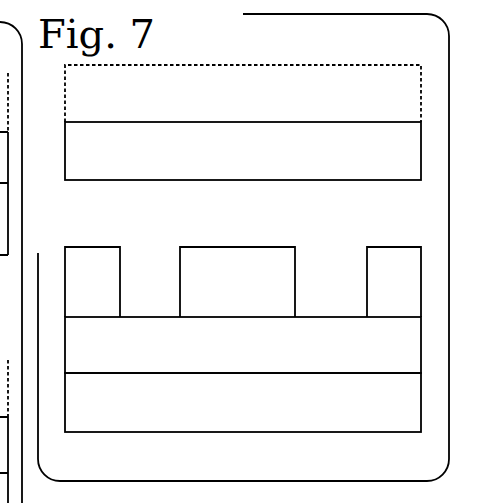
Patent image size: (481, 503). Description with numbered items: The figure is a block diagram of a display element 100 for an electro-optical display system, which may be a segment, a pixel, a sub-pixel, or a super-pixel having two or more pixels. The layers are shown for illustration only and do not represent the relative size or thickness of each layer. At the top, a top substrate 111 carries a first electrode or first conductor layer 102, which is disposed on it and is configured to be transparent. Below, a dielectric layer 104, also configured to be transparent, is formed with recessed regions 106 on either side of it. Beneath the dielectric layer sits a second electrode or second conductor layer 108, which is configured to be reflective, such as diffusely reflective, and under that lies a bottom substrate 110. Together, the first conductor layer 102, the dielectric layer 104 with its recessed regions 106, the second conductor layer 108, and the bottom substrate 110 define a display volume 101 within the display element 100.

The display element 100 is at (369, 46).
The display volume 101 is at (66, 222).
The first conductor layer 102 is at (265, 162).
The dielectric layer 104 is at (265, 292).
The recessed regions 106 is at (322, 270).
The second conductor layer 108 is at (265, 357).
The bottom substrate 110 is at (265, 404).
The top substrate 111 is at (265, 103).